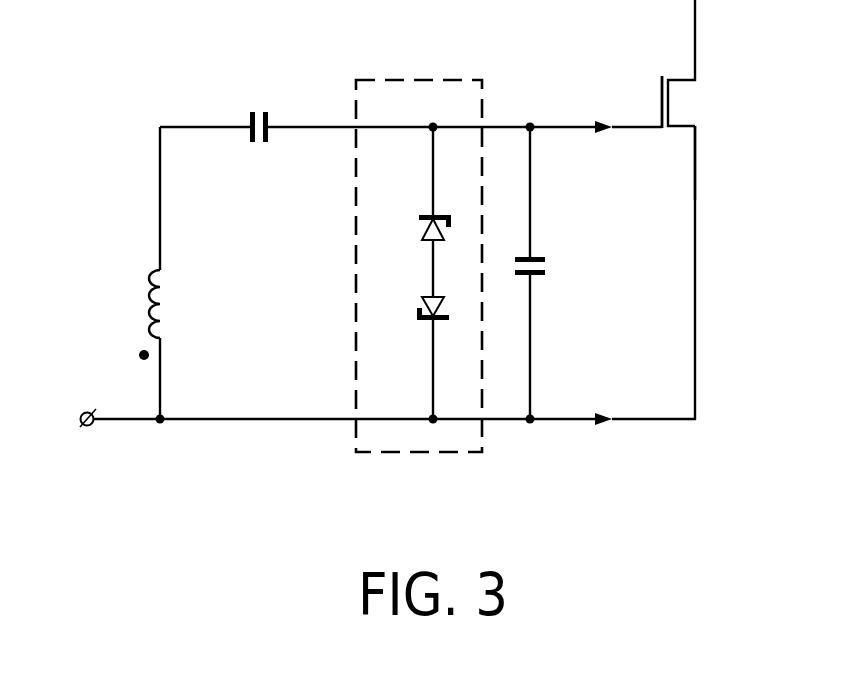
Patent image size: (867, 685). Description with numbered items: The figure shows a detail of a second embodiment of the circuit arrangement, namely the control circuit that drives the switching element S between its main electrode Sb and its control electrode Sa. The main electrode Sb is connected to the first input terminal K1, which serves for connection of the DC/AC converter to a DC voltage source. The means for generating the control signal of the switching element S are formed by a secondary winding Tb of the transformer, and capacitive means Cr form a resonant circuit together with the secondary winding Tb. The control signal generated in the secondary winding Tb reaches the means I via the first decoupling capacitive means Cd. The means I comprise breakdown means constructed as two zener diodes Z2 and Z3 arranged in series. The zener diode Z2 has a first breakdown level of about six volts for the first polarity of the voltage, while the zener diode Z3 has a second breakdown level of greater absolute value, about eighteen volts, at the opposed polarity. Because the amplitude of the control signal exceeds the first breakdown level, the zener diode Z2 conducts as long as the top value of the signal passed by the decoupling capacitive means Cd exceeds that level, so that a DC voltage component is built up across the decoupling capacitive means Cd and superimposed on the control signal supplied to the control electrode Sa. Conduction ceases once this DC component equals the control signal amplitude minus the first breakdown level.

The first decoupling capacitive means Cd is at (259, 146).
The secondary winding Tb is at (149, 300).
The first input terminal K1 is at (84, 428).
The means I is at (386, 70).
The zener diode Z2 is at (420, 225).
The zener diode Z3 is at (418, 306).
The capacitive means Cr is at (546, 266).
The switching element S is at (684, 104).
The control electrode Sa is at (624, 125).
The main electrode Sb is at (697, 172).